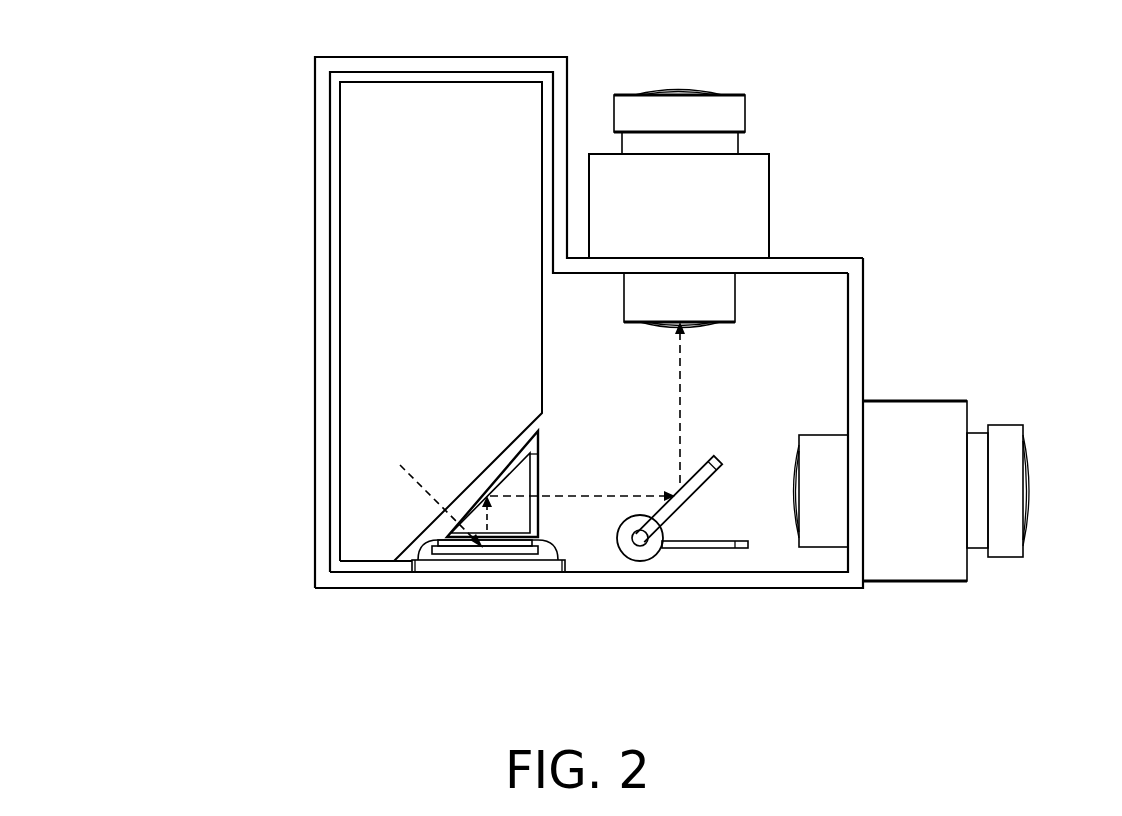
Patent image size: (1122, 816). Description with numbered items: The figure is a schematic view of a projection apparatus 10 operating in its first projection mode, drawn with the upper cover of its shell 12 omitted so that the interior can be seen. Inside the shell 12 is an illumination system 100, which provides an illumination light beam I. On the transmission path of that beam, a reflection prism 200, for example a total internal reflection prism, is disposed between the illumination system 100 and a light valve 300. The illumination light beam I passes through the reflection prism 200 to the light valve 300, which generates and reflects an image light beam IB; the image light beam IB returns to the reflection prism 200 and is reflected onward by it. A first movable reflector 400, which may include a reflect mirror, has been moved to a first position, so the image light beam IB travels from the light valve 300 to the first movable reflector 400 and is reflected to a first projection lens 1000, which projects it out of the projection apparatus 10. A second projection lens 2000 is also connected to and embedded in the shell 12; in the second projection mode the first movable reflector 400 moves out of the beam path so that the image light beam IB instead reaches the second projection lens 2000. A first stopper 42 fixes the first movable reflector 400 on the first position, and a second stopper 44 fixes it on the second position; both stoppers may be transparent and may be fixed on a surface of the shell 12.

The projection apparatus 10 is at (1088, 707).
The illumination system 100 is at (347, 97).
The shell 12 is at (856, 556).
The first projection lens 1000 is at (735, 115).
The second projection lens 2000 is at (1008, 540).
The light valve 300 is at (445, 556).
The image light beam IB is at (498, 540).
The reflection prism 200 is at (517, 520).
The first movable reflector 400 is at (680, 512).
The first stopper 42 is at (713, 456).
The second stopper 44 is at (743, 548).
The illumination light beam I is at (430, 497).